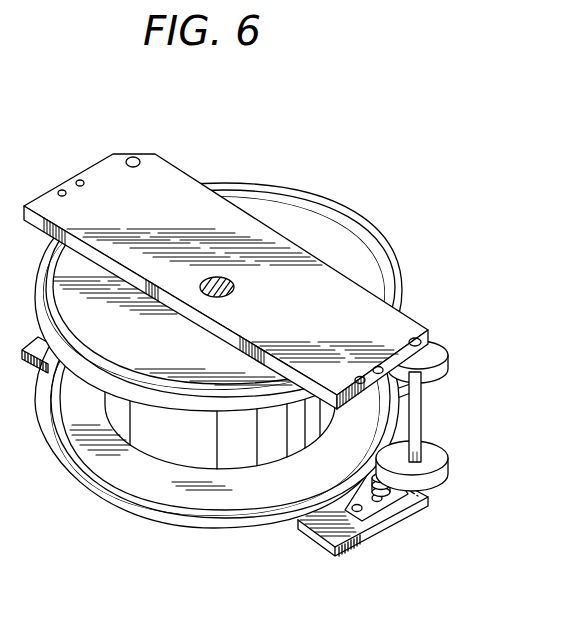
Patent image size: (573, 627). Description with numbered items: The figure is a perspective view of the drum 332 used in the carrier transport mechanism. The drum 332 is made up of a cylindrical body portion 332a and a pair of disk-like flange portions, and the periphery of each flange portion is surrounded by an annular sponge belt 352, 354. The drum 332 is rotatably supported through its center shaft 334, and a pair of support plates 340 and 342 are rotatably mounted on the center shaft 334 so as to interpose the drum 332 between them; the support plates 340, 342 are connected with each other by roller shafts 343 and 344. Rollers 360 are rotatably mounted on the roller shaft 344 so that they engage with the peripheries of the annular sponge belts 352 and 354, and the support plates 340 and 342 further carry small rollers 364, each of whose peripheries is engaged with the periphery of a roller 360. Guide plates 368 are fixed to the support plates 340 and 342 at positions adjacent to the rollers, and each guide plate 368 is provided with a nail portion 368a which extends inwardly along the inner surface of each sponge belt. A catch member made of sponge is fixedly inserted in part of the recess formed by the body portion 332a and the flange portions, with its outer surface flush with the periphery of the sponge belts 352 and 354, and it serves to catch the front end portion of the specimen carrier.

The drum 332 is at (293, 190).
The cylindrical body portion 332a is at (197, 453).
The center shaft 334 is at (233, 292).
The support plate 340 is at (332, 293).
The support plate 342 is at (330, 528).
The roller shaft 343 is at (133, 157).
The roller shaft 344 is at (424, 418).
The annular sponge belt 352 is at (345, 212).
The annular sponge belt 354 is at (83, 490).
The rollers 360 is at (449, 465).
The small rollers 364 is at (420, 513).
The guide plates 368 is at (366, 505).
The nail portion 368a is at (368, 462).